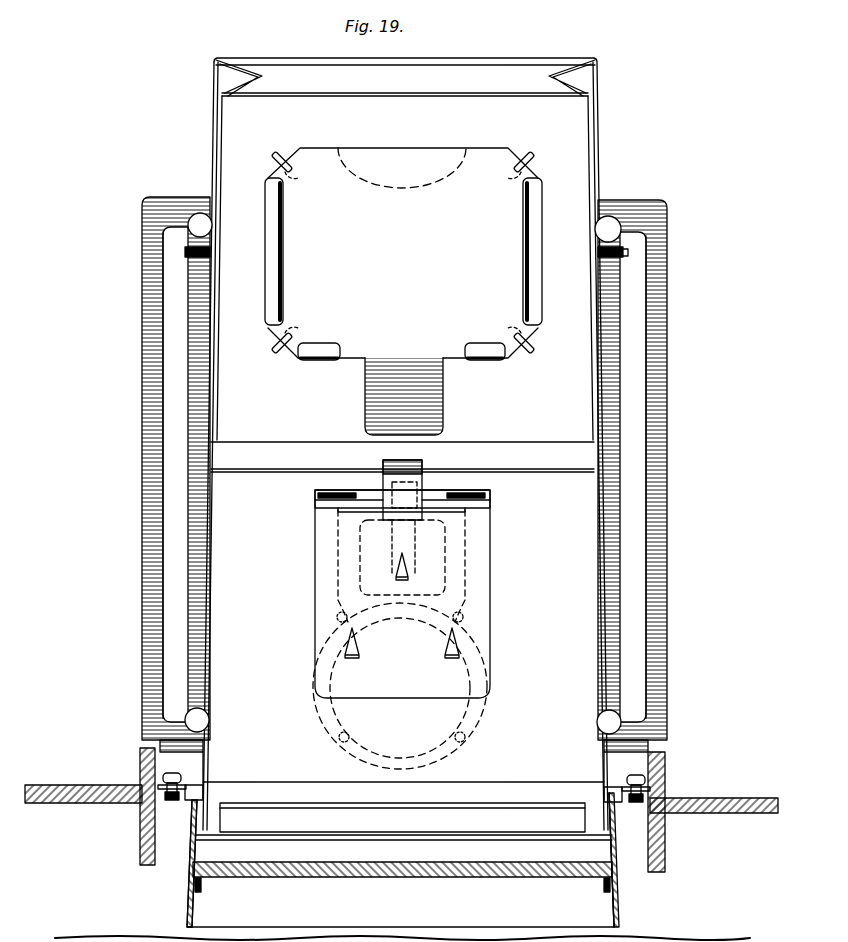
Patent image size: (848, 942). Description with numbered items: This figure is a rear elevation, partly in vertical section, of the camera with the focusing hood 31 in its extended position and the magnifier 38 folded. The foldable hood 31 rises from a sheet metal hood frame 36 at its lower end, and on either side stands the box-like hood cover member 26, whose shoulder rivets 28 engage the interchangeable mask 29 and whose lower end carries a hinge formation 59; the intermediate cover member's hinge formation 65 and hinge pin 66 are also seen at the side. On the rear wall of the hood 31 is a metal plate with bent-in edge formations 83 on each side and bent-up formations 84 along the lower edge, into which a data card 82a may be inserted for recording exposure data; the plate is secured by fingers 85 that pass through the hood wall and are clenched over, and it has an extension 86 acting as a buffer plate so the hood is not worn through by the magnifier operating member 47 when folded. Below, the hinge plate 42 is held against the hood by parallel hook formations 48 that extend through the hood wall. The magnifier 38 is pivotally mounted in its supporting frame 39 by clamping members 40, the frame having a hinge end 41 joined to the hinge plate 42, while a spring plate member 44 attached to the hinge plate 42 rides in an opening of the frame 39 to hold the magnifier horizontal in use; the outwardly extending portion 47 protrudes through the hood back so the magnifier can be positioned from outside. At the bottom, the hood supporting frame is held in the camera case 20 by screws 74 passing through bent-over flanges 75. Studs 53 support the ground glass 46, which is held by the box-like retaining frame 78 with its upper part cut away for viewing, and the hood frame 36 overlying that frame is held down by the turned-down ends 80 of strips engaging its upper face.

The outer case or box 20 is at (752, 792).
The hood cover member 26 is at (662, 333).
The shoulder rivets 28 is at (205, 233).
The mask 29 is at (648, 358).
The focusing hood 31 is at (585, 155).
The hood frame 36 is at (418, 814).
The magnifier 38 is at (468, 712).
The magnifier supporting frame 39 is at (340, 565).
The clamping members 40 is at (340, 740).
The hinge end 41 is at (325, 506).
The hinge plate 42 is at (490, 607).
The spring plate member 44 is at (418, 547).
The ground glass 46 is at (410, 872).
The outwardly extending portion 47 is at (422, 466).
The hook formations 48 is at (406, 568).
The studs 53 is at (203, 887).
The hinge formation 59 is at (160, 746).
The hinge formation 65 is at (205, 260).
The hinge pin 66 is at (626, 256).
The screws 74 is at (165, 800).
The bent-over flanges 75 is at (179, 806).
The ground glass retaining frame 78 is at (200, 845).
The turned-down ends 80 is at (205, 792).
The data card 82a is at (456, 148).
The bent-in edge formations 83 is at (280, 268).
The bent-up formations 84 is at (320, 356).
The fingers 85 is at (283, 160).
The extension 86 is at (440, 390).